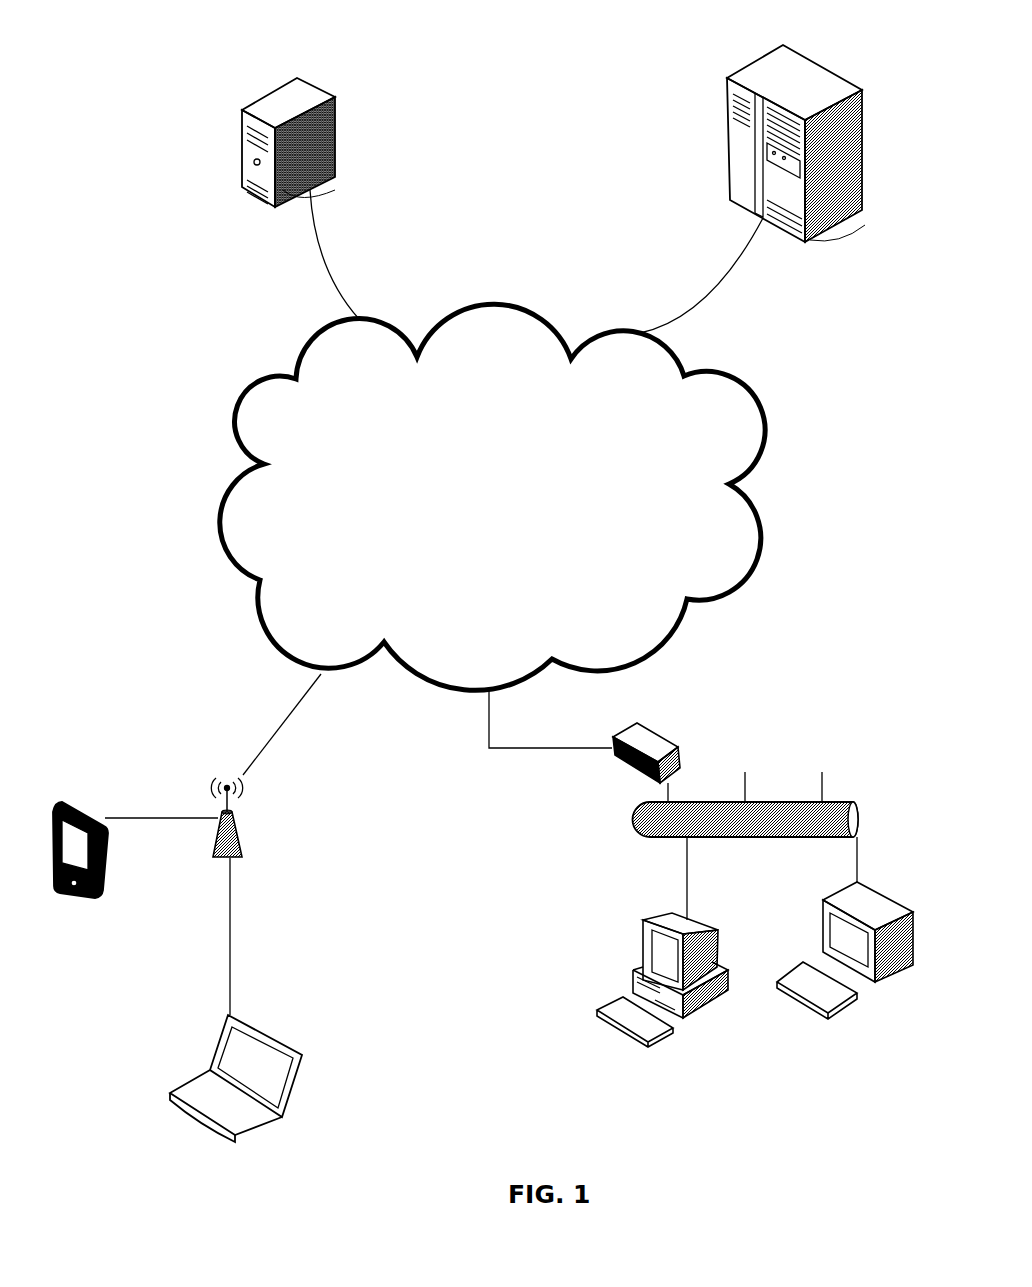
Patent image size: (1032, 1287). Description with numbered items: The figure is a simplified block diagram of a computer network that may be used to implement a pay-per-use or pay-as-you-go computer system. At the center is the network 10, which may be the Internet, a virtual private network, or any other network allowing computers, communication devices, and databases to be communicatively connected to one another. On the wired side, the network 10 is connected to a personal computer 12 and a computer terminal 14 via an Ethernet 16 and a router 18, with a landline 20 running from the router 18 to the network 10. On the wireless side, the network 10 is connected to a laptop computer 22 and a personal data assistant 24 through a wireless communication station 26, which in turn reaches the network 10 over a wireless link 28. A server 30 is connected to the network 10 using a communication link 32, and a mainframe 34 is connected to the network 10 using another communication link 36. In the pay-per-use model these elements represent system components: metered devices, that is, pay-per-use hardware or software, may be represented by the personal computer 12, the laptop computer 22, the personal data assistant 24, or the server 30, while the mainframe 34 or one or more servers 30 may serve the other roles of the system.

The network 10 is at (185, 385).
The personal computer 12 is at (637, 963).
The computer terminal 14 is at (892, 905).
The Ethernet 16 is at (850, 803).
The router 18 is at (680, 745).
The landline 20 is at (532, 750).
The laptop computer 22 is at (257, 1132).
The personal data assistant 24 is at (85, 812).
The wireless communication station 26 is at (242, 852).
The wireless link 28 is at (270, 733).
The server 30 is at (337, 145).
The communication link 32 is at (342, 293).
The mainframe 34 is at (820, 238).
The communication link 36 is at (730, 275).